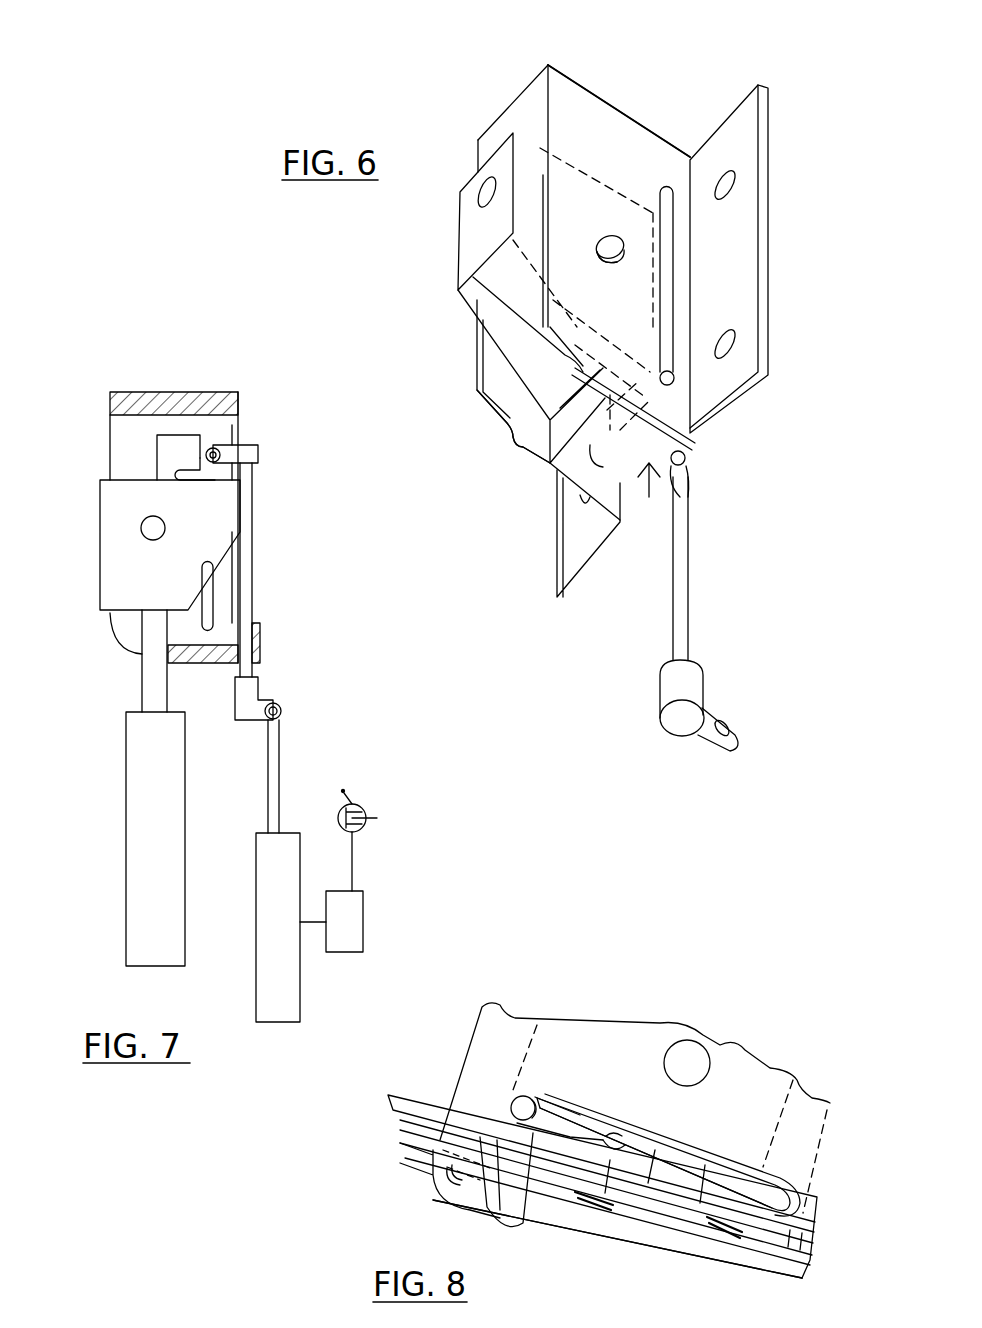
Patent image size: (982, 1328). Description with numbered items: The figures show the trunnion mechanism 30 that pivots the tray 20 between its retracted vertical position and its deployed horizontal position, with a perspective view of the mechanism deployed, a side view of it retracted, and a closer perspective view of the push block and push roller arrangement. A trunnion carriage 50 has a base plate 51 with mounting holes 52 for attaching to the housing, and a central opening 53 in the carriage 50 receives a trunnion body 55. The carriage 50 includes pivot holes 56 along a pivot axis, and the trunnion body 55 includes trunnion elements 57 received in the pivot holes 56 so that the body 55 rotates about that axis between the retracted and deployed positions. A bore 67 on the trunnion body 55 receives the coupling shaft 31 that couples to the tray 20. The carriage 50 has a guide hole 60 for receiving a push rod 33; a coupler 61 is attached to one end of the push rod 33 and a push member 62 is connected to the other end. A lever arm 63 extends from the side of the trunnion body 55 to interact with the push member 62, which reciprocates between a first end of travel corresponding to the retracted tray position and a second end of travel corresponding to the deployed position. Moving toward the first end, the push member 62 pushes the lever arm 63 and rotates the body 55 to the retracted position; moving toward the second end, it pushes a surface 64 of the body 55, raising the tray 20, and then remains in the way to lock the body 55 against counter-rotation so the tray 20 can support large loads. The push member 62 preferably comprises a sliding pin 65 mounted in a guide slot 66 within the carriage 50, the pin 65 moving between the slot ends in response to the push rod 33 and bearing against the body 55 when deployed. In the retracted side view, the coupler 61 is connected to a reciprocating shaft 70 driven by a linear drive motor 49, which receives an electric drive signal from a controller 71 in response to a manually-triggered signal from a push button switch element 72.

In FIG. 7, the tray 20 is at (134, 833).
In FIG. 6, the trunnion mechanism 30 is at (462, 470).
In FIG. 7, the trunnion mechanism 30 is at (82, 494).
In FIG. 8, the trunnion mechanism 30 is at (632, 995).
In FIG. 7, the coupling shaft 31 is at (145, 680).
In FIG. 6, the push rod 33 is at (687, 605).
In FIG. 7, the push rod 33 is at (253, 573).
In FIG. 7, the linear drive motor 49 is at (267, 900).
In FIG. 6, the trunnion carriage 50 is at (568, 62).
In FIG. 8, the trunnion carriage 50 is at (452, 1205).
In FIG. 6, the base plate 51 is at (768, 118).
In FIG. 6, the mounting holes 52 is at (737, 193).
In FIG. 6, the central opening 53 is at (488, 377).
In FIG. 6, the trunnion body 55 is at (463, 240).
In FIG. 7, the trunnion body 55 is at (118, 552).
In FIG. 6, the pivot holes 56 is at (602, 263).
In FIG. 6, the trunnion elements 57 is at (617, 243).
In FIG. 7, the trunnion elements 57 is at (158, 542).
In FIG. 8, the trunnion elements 57 is at (708, 1058).
In FIG. 6, the guide hole 60 is at (690, 500).
In FIG. 6, the coupler 61 is at (662, 705).
In FIG. 7, the coupler 61 is at (245, 719).
In FIG. 6, the push member 62 is at (698, 427).
In FIG. 7, the push member 62 is at (256, 457).
In FIG. 8, the push member 62 is at (535, 1218).
In FIG. 6, the lever arm 63 is at (690, 320).
In FIG. 7, the lever arm 63 is at (162, 455).
In FIG. 8, the lever arm 63 is at (687, 1243).
In FIG. 7, the surface 64 is at (218, 480).
In FIG. 8, the surface 64 is at (620, 1135).
In FIG. 6, the sliding pin 65 is at (623, 433).
In FIG. 7, the sliding pin 65 is at (208, 452).
In FIG. 8, the sliding pin 65 is at (550, 1105).
In FIG. 6, the guide slot 66 is at (683, 157).
In FIG. 8, the guide slot 66 is at (802, 1208).
In FIG. 6, the bore 67 is at (482, 198).
In FIG. 7, the reciprocating shaft 70 is at (280, 785).
In FIG. 7, the controller 71 is at (344, 943).
In FIG. 7, the push button switch element 72 is at (365, 815).